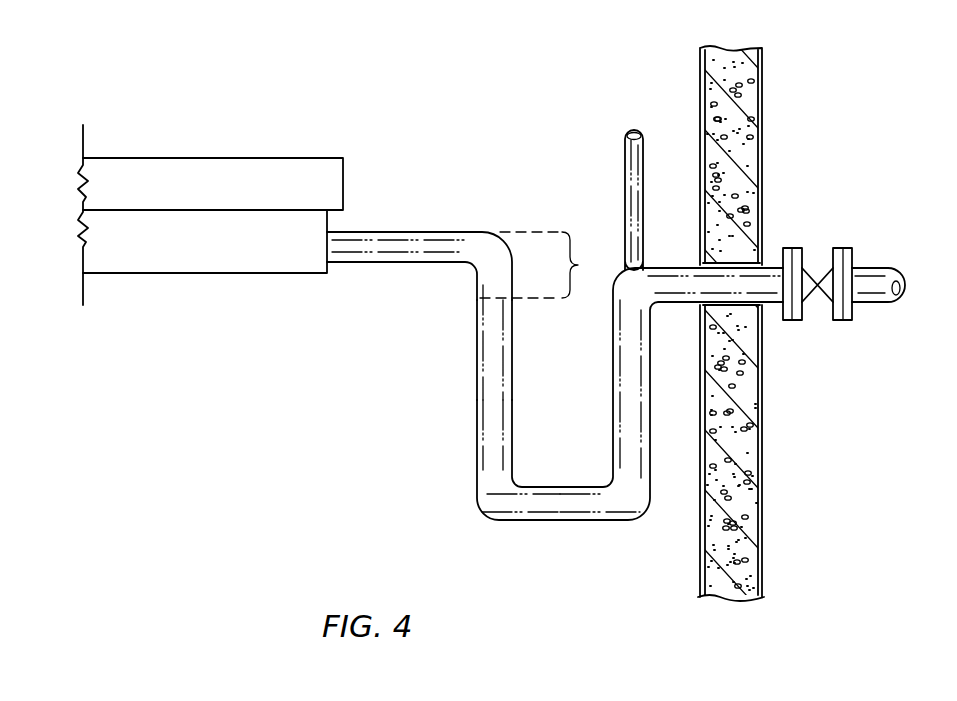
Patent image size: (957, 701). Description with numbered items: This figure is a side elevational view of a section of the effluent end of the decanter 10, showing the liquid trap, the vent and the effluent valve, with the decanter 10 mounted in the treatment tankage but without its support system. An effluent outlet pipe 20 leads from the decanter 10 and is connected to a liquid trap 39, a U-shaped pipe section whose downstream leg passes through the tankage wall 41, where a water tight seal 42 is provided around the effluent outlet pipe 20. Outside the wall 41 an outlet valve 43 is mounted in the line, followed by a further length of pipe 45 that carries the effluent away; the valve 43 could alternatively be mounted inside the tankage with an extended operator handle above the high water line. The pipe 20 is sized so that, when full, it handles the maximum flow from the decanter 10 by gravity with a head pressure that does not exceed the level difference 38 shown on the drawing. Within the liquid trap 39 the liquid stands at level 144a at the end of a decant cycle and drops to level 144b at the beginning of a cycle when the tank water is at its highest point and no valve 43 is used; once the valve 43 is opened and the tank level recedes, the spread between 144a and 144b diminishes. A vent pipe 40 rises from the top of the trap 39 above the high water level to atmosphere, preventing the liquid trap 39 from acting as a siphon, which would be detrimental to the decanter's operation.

The decanter 10 is at (226, 152).
The effluent outlet pipe 20 is at (370, 232).
The level difference 38 is at (547, 265).
The liquid trap 39 is at (613, 418).
The vent pipe 40 is at (626, 168).
The tankage wall 41 is at (752, 187).
The water tight seal 42 is at (762, 262).
The outlet valve 43 is at (815, 270).
The outlet pipe 45 is at (882, 270).
The liquid level at end of decant cycle 144a is at (478, 300).
The liquid level at beginning of decant cycle 144b is at (478, 480).